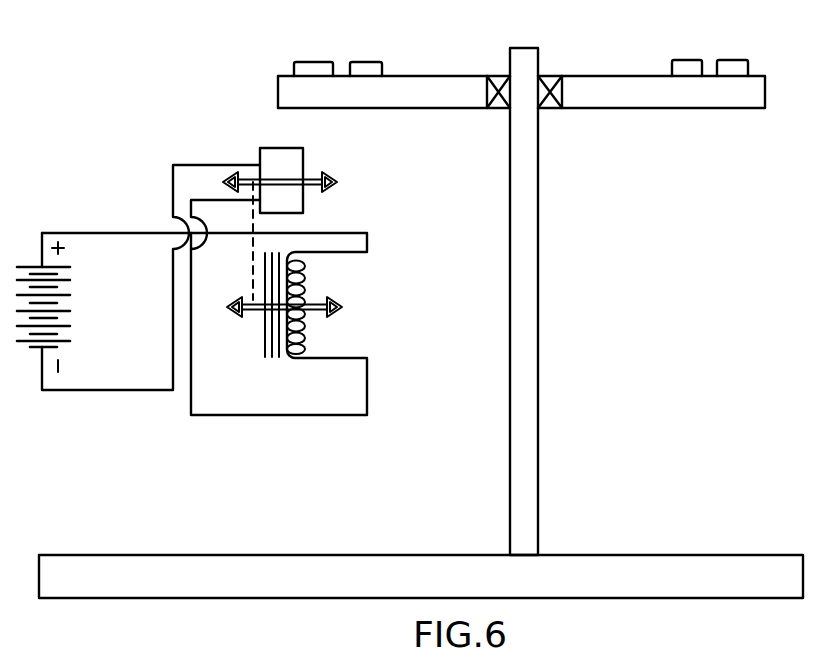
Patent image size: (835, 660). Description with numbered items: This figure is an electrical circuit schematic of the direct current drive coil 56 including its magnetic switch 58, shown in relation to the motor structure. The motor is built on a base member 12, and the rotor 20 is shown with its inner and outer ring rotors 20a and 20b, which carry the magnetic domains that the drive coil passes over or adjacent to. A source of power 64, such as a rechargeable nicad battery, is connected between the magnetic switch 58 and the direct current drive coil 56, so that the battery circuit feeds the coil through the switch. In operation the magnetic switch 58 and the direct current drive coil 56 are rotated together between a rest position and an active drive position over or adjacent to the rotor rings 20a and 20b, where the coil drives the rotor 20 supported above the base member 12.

The base member 12 is at (746, 554).
The rotor 20 is at (603, 59).
The inner ring rotor 20a is at (673, 59).
The outer ring rotor 20b is at (749, 60).
The direct current drive coil 56 is at (305, 272).
The magnetic switch 58 is at (303, 160).
The source of power 64 is at (70, 318).